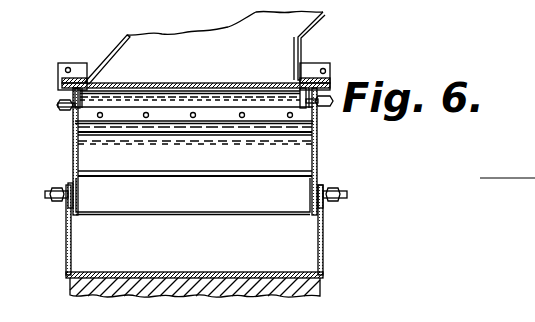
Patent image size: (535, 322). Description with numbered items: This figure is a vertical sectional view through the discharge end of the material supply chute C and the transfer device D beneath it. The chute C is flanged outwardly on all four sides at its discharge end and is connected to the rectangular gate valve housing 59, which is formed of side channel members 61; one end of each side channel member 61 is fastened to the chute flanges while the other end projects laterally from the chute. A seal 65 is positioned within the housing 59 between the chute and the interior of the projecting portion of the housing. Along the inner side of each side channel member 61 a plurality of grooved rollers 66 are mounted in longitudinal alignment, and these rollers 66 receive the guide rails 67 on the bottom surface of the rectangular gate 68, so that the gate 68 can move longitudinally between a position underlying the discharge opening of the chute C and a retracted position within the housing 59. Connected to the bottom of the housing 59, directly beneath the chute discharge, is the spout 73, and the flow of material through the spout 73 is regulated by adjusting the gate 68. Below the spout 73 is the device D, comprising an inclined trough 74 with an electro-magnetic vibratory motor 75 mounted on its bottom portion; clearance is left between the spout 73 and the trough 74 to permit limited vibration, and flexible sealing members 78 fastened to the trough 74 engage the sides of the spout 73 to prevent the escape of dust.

The material supply chute C is at (318, 25).
The device D is at (322, 232).
The gate valve housing 59 is at (73, 118).
The side channel members 61 is at (66, 92).
The seal 65 is at (185, 97).
The grooved rollers 66 is at (116, 87).
The guide rails 67 is at (87, 80).
The rectangular gate 68 is at (161, 84).
The spout 73 is at (318, 162).
The trough 74 is at (323, 263).
The electro-magnetic vibratory motor 75 is at (322, 292).
The flexible sealing members 78 is at (71, 186).